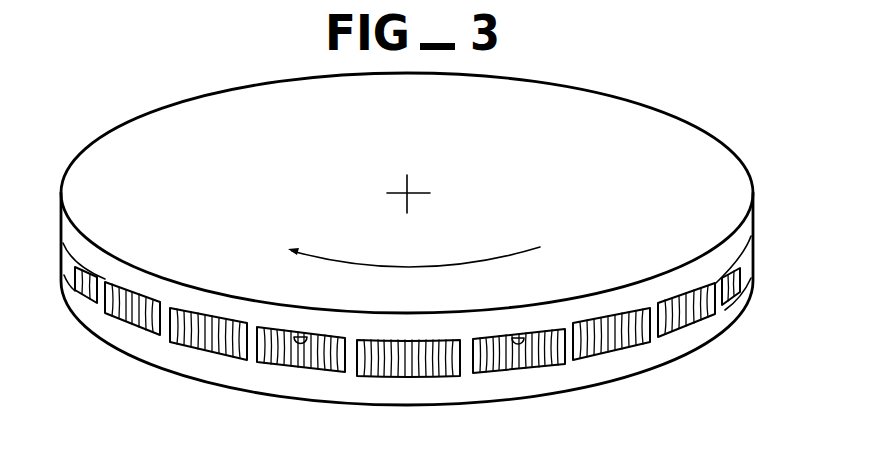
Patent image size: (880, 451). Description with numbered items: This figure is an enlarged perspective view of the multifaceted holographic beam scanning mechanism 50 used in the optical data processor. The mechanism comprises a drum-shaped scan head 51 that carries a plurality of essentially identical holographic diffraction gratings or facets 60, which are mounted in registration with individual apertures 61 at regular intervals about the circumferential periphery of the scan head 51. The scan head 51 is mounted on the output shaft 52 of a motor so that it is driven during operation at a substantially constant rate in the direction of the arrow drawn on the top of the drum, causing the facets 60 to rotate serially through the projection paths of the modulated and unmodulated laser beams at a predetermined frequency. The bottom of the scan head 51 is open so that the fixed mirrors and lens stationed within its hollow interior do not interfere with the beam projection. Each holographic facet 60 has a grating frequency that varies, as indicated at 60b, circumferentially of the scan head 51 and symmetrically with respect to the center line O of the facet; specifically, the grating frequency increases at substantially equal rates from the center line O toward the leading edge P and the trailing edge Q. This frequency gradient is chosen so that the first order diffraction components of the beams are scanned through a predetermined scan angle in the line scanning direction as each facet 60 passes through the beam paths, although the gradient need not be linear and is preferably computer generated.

The beam scanning mechanism 50 is at (690, 83).
The scan head 51 is at (100, 160).
The output shaft 52 is at (412, 190).
The holographic diffraction gratings or facets 60 is at (152, 296).
The grating frequency variation 60b is at (192, 340).
The apertures 61 is at (298, 337).
The leading edge P is at (258, 363).
The center line O is at (302, 368).
The trailing edge Q is at (344, 370).